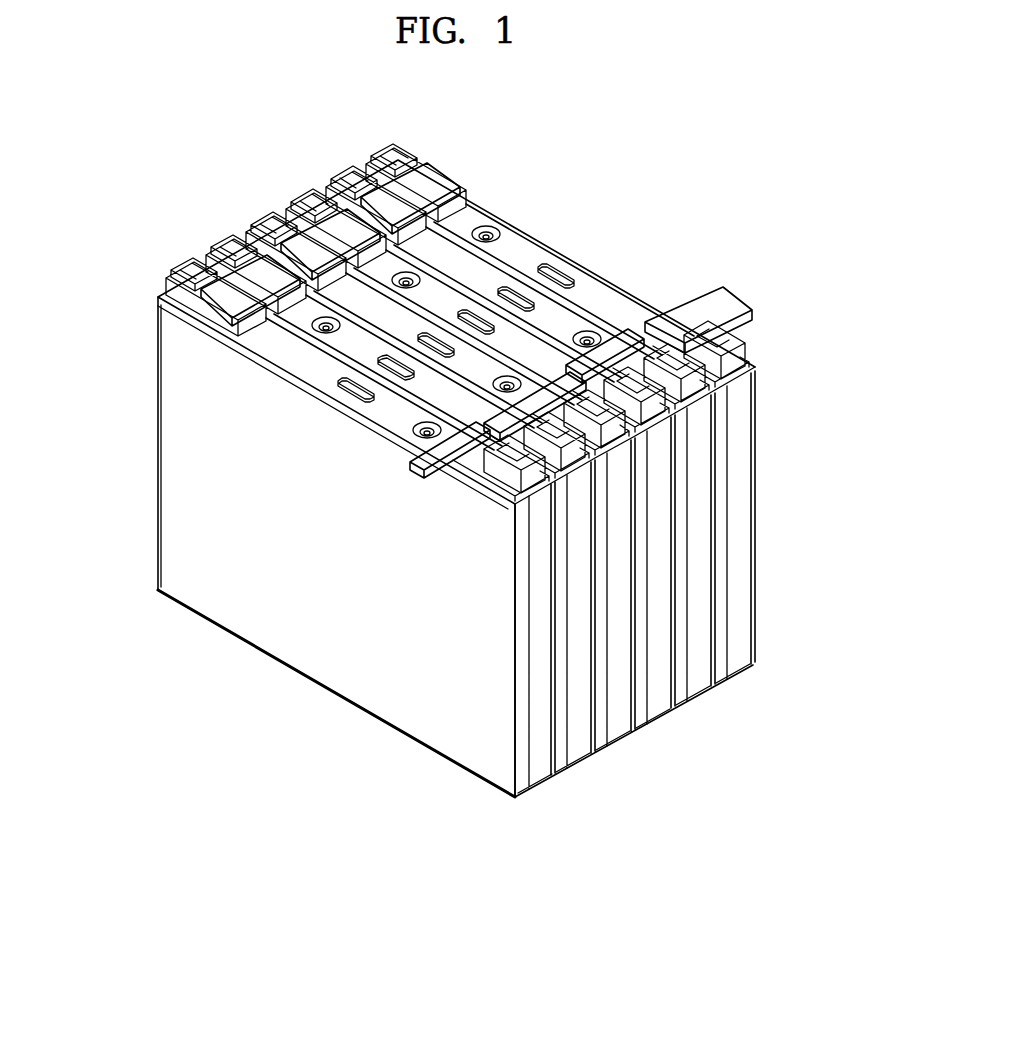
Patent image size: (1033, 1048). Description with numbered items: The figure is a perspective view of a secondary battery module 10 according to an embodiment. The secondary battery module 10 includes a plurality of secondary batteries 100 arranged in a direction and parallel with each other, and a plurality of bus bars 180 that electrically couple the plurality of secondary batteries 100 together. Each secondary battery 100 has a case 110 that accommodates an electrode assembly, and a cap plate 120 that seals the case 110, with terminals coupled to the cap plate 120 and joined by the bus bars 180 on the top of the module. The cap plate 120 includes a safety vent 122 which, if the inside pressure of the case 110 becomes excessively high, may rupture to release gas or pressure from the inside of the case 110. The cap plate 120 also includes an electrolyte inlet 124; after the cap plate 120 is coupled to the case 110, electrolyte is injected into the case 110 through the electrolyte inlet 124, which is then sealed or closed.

The secondary battery module 10 is at (692, 193).
The secondary battery 100 is at (543, 802).
The case 110 is at (312, 645).
The cap plate 120 is at (285, 350).
The safety vent 122 is at (561, 275).
The electrolyte inlet 124 is at (489, 232).
The bus bar 180 is at (318, 237).